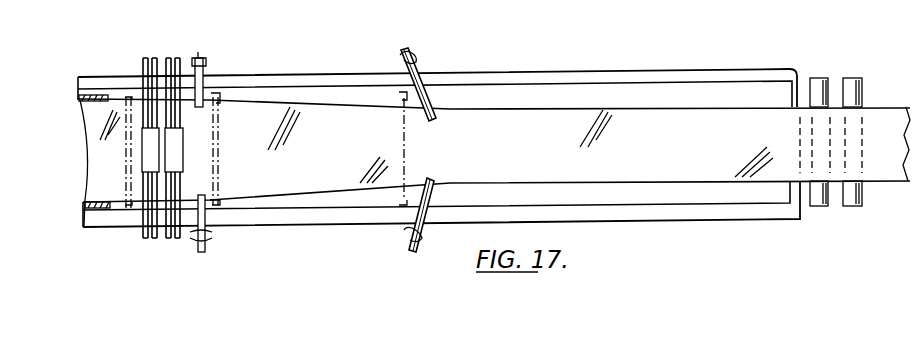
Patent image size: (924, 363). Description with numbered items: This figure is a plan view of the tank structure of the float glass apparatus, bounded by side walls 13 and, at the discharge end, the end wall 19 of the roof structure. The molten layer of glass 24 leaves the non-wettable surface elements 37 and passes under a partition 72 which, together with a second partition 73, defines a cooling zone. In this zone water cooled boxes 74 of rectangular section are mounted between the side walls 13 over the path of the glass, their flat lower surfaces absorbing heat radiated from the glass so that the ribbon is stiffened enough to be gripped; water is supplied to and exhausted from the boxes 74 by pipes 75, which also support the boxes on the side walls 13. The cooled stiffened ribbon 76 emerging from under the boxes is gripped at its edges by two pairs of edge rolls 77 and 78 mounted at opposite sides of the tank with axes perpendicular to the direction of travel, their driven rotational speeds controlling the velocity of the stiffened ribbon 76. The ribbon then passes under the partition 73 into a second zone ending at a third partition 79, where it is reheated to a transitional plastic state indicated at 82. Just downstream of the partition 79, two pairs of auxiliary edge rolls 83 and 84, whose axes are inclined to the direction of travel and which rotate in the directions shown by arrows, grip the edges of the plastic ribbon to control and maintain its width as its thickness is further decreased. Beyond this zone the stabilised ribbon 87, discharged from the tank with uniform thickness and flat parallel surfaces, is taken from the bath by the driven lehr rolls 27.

The side walls 13 is at (280, 82).
The end wall 19 is at (793, 70).
The layer of glass 24 is at (90, 158).
The driven rolls 27 is at (848, 207).
The non-wettable surface elements 37 is at (80, 100).
The partition 72 is at (118, 205).
The second partition 73 is at (220, 212).
The water cooled boxes 74 is at (172, 150).
The pipes 75 is at (168, 57).
The stiffened ribbon 76 is at (214, 150).
The edge rolls 77 is at (197, 57).
The edge rolls 78 is at (197, 245).
The third partition 79 is at (398, 90).
The plastic ribbon 82 is at (322, 135).
The auxiliary edge rolls 83 is at (418, 62).
The auxiliary edge rolls 84 is at (407, 240).
The ribbon 87 is at (763, 115).